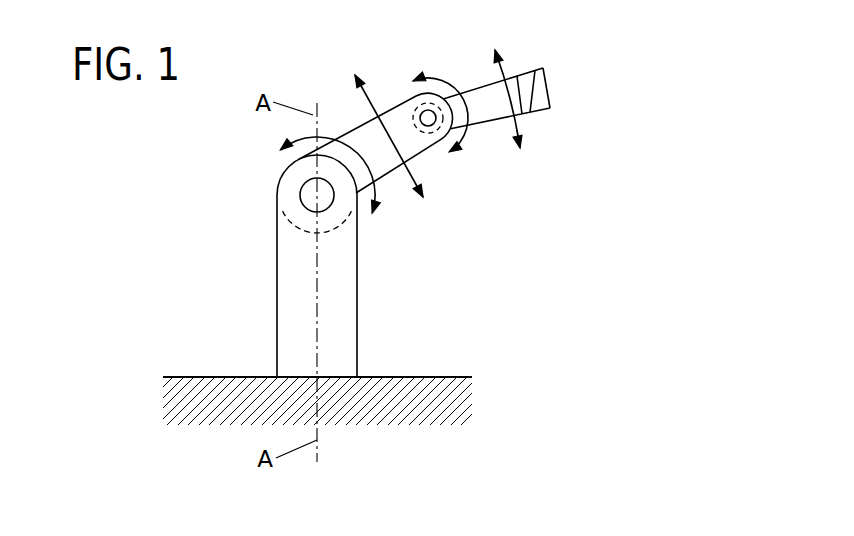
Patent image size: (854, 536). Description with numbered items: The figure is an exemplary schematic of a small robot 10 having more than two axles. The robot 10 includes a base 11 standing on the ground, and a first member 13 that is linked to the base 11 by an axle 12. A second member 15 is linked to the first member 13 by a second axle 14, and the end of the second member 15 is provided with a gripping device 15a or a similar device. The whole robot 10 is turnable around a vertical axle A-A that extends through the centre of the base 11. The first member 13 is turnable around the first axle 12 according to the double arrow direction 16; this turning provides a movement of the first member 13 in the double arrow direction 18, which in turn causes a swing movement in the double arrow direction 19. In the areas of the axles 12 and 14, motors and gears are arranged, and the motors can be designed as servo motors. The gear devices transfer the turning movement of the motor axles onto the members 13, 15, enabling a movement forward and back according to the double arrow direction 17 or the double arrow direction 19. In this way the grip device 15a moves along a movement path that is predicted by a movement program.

The small robot 10 is at (188, 317).
The base 11 is at (338, 308).
The axle 12 is at (310, 198).
The first member 13 is at (363, 143).
The second axle 14 is at (423, 112).
The second member 15 is at (492, 102).
The gripping device 15a is at (545, 100).
The double arrow direction 16 is at (377, 190).
The double arrow direction 17 is at (417, 172).
The double arrow direction 18 is at (465, 132).
The double arrow direction 19 is at (512, 70).